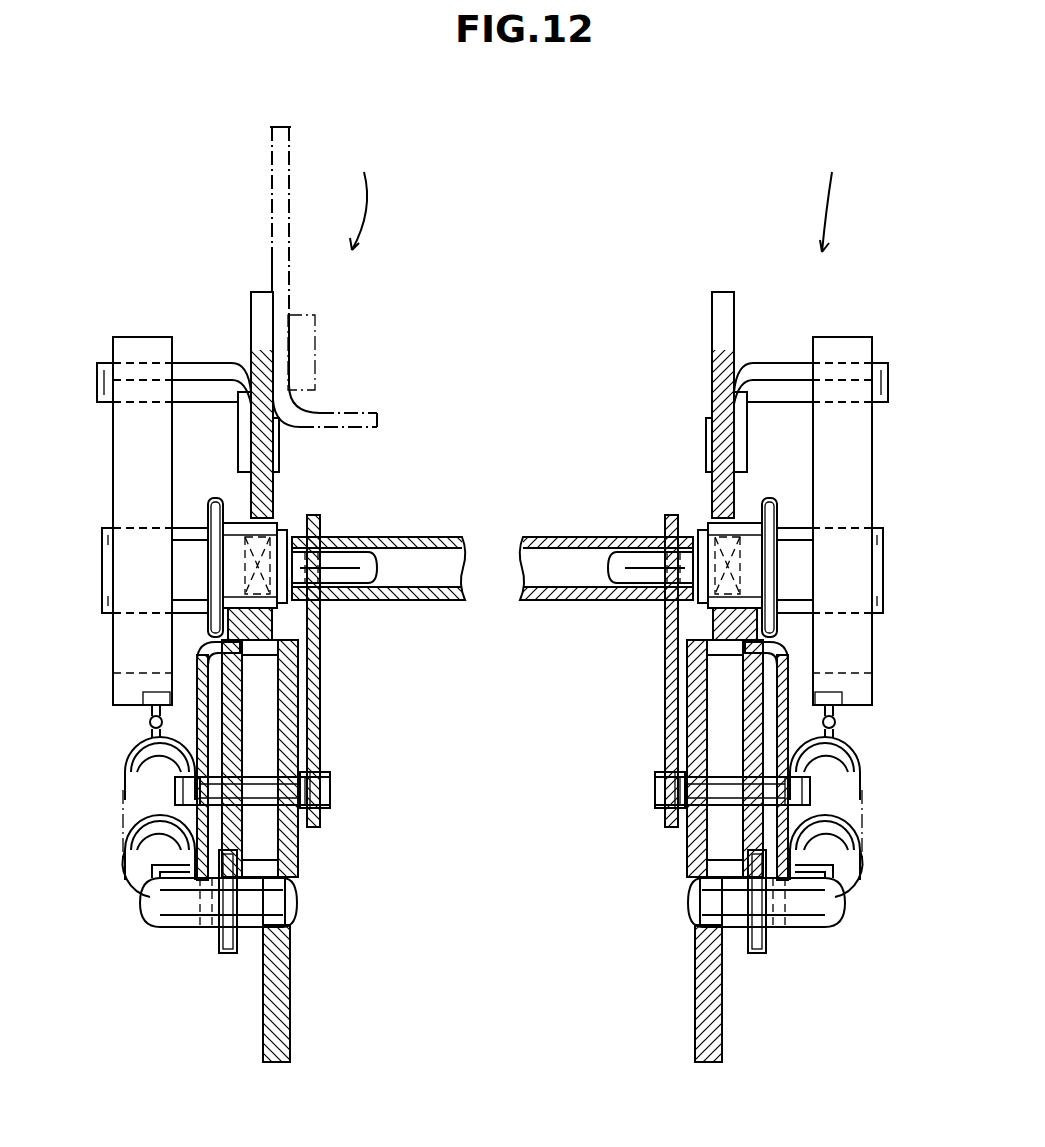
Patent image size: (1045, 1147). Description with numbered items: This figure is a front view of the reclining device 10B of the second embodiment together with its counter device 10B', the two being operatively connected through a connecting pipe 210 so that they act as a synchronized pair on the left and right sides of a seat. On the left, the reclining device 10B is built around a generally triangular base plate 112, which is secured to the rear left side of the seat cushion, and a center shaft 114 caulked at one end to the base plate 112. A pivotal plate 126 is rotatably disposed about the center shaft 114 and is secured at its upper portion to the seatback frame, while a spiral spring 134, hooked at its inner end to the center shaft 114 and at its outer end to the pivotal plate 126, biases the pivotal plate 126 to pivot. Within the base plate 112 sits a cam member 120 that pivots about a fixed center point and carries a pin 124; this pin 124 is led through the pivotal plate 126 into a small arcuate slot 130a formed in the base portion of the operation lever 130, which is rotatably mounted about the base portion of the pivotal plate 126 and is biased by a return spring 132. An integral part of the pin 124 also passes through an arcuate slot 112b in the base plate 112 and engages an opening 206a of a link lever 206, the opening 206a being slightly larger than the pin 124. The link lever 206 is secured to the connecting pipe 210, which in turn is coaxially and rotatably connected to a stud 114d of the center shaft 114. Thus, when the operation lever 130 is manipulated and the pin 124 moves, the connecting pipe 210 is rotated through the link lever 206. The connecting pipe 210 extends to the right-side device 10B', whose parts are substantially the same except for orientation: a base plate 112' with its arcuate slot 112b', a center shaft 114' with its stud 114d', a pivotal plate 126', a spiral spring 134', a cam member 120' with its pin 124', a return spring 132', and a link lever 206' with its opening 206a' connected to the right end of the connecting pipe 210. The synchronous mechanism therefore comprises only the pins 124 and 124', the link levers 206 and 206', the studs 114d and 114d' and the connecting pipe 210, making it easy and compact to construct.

The reclining device 10B is at (363, 191).
The pivotal plate 126 is at (214, 322).
The spiral spring 134 is at (115, 537).
The center shaft 114 is at (169, 569).
The stud 114d is at (338, 529).
The connecting pipe 210 is at (429, 537).
The link lever 206 is at (305, 697).
The cam member 120 is at (315, 758).
The opening 206a is at (300, 787).
The arcuate slot 112b is at (359, 801).
The base plate 112 is at (319, 969).
The pin 124 is at (228, 940).
The operation lever 130 is at (190, 882).
The small arcuate slot 130a is at (176, 796).
The return spring 132 is at (193, 893).
The reclining device 10B' is at (836, 192).
The pivotal plate 126' is at (750, 405).
The spiral spring 134' is at (874, 537).
The center shaft 114' is at (815, 566).
The stud 114d' is at (649, 530).
The link lever 206' is at (668, 697).
The cam member 120' is at (655, 758).
The opening 206a' is at (679, 787).
The arcuate slot 112b' is at (649, 819).
The base plate 112' is at (651, 969).
The pin 124' is at (665, 871).
The return spring 132' is at (791, 841).